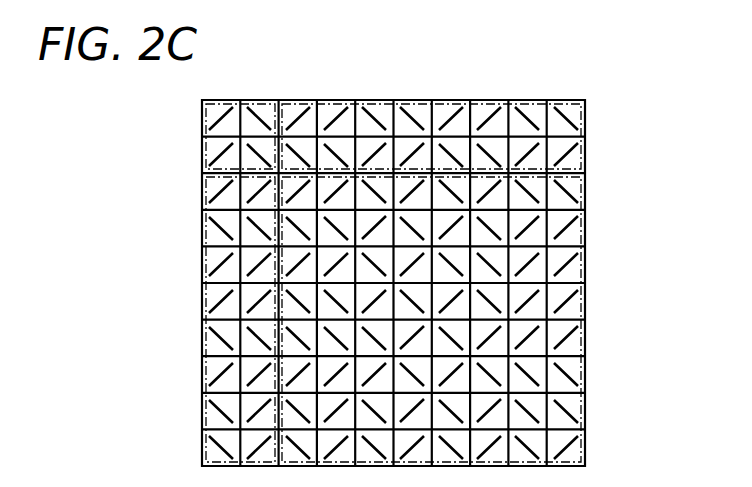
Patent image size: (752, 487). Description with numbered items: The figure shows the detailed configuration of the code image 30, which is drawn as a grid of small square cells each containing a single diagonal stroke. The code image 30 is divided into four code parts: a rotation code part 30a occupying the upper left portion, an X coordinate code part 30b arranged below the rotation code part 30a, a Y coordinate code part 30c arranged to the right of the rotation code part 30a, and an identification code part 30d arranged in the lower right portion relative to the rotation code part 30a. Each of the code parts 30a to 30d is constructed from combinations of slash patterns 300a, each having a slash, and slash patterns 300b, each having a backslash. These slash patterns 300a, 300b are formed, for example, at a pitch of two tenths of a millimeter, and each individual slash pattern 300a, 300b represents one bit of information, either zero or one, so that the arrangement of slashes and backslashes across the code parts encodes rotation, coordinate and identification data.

The code image 30 is at (447, 100).
The rotation code part 30a is at (203, 118).
The X coordinate code part 30b is at (203, 242).
The Y coordinate code part 30c is at (585, 126).
The identification code part 30d is at (585, 258).
The slash pattern 300a is at (203, 300).
The slash pattern 300b is at (205, 411).